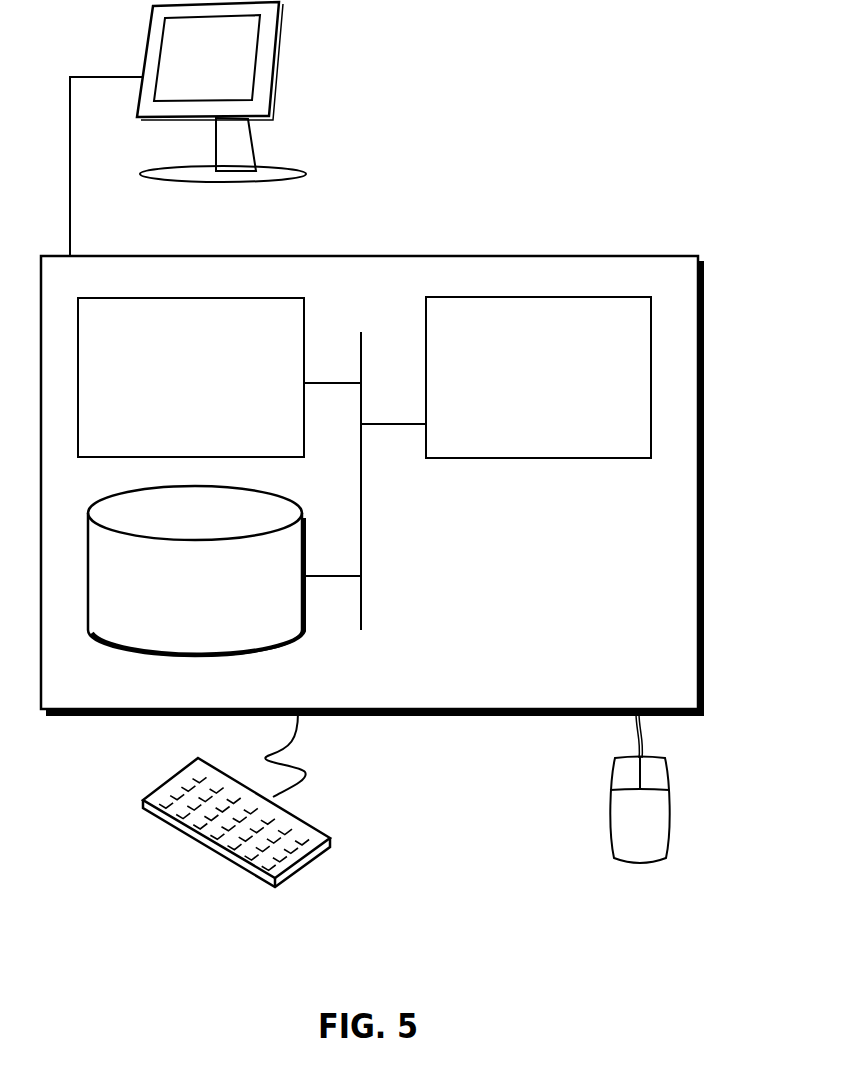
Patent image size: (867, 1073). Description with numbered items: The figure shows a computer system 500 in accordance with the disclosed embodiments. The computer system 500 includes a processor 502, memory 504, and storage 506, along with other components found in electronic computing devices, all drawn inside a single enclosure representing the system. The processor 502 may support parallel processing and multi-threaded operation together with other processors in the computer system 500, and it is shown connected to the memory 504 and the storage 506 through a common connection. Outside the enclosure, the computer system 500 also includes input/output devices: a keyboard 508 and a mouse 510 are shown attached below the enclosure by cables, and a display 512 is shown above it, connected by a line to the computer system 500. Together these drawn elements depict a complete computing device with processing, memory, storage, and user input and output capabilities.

The computer system 500 is at (415, 235).
The processor 502 is at (538, 377).
The memory 504 is at (191, 377).
The storage 506 is at (196, 571).
The keyboard 508 is at (163, 822).
The mouse 510 is at (640, 788).
The display 512 is at (188, 129).